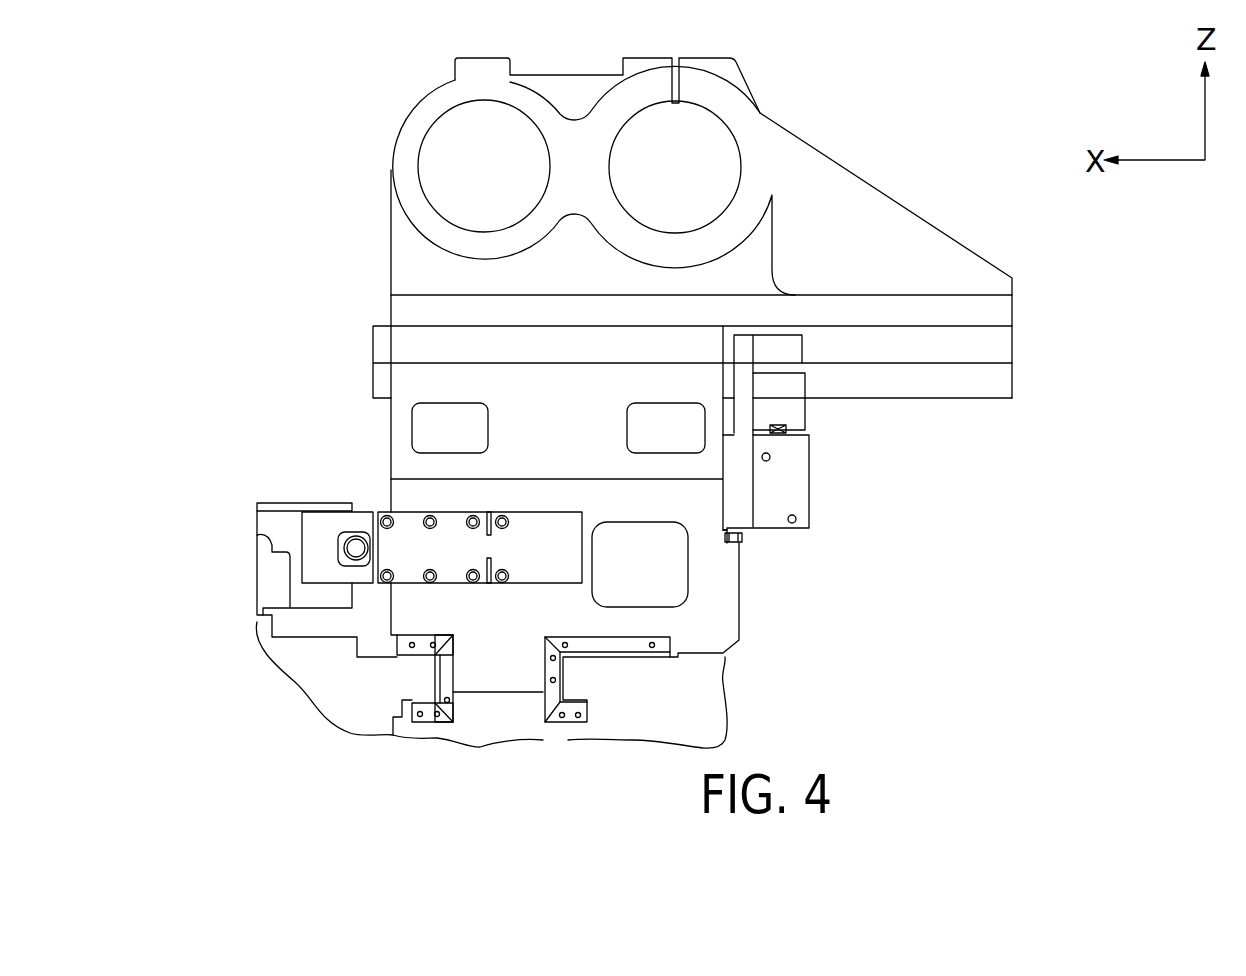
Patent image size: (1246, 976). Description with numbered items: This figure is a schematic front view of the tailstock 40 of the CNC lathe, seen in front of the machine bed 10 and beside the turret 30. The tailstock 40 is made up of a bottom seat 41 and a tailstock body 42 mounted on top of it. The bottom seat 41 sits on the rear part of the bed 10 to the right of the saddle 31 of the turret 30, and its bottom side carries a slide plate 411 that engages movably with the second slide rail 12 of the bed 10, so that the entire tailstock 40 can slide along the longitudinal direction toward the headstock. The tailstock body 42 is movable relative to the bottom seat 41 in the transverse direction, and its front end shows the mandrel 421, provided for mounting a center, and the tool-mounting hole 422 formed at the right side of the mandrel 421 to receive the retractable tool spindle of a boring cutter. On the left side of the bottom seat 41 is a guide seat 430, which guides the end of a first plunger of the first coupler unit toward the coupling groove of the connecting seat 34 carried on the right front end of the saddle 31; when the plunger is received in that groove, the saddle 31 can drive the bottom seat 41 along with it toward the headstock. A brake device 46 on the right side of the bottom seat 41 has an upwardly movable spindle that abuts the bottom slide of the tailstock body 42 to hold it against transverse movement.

The bed 10 is at (740, 697).
The second slide rail 12 is at (556, 707).
The turret 30 is at (282, 490).
The saddle 31 is at (283, 531).
The connecting seat 34 is at (328, 512).
The tailstock 40 is at (910, 177).
The bottom seat 41 is at (725, 605).
The tailstock body 42 is at (822, 168).
The brake device 46 is at (792, 486).
The slide plate 411 is at (496, 673).
The mandrel 421 is at (462, 133).
The tool-mounting hole 422 is at (688, 122).
The guide seat 430 is at (407, 570).